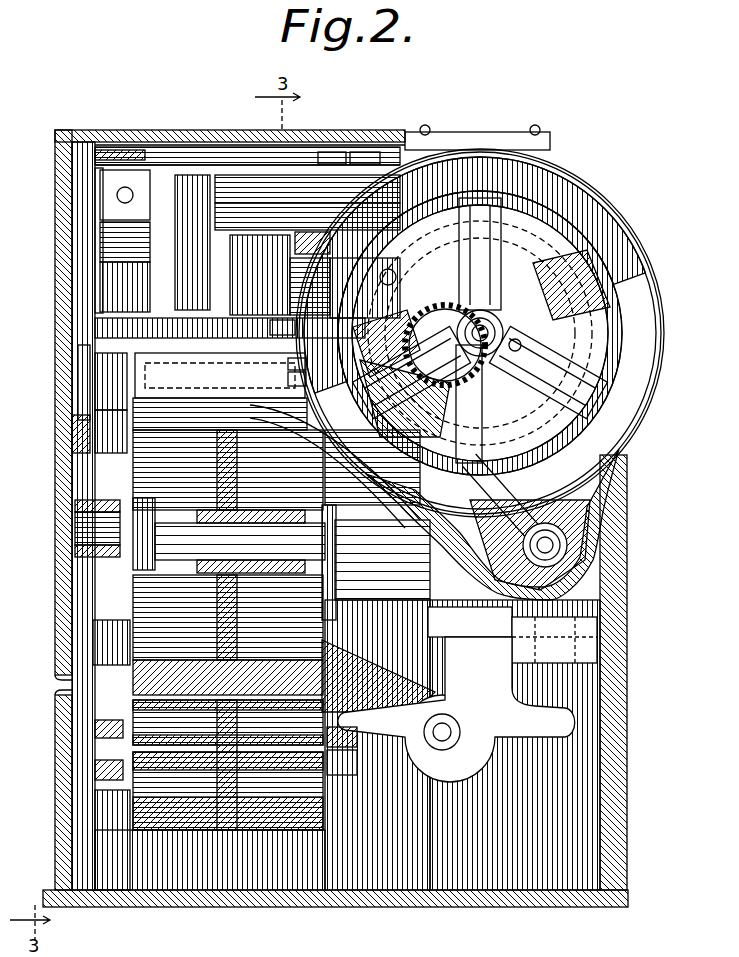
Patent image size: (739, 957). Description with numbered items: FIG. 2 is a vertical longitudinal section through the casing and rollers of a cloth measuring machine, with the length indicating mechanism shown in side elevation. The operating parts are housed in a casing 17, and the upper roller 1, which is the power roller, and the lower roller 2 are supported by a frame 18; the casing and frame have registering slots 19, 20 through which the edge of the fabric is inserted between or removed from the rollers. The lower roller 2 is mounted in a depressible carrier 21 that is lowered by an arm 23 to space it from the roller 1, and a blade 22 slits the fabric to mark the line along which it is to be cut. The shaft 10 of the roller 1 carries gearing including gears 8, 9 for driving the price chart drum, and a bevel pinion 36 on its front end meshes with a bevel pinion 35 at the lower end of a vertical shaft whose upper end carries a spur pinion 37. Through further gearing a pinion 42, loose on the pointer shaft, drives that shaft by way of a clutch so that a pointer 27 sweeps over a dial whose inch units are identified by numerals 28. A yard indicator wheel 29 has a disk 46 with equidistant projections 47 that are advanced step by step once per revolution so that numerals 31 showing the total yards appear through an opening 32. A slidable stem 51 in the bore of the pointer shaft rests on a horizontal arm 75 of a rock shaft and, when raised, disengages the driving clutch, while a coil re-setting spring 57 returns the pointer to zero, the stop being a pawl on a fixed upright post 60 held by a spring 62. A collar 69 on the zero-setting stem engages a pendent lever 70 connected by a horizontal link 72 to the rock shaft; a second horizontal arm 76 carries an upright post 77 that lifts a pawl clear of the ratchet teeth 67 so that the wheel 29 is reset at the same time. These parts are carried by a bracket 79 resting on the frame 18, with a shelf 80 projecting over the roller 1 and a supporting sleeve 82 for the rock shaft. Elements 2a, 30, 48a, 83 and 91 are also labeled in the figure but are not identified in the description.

The upper roller 1 is at (305, 615).
The lower roller 2 is at (325, 820).
The bracket 2a is at (432, 612).
The gear 8 is at (612, 505).
The gear 9 is at (480, 333).
The shaft 10 is at (377, 515).
The casing 17 is at (55, 773).
The frame 18 is at (72, 805).
The slot 19 is at (72, 680).
The slot 20 is at (111, 642).
The depressible carrier 21 is at (357, 770).
The blade 22 is at (378, 676).
The arm 23 is at (456, 709).
The pointer 27 is at (238, 147).
The numerals 28 is at (362, 152).
The yard indicator wheel 29 is at (100, 195).
The bearing block 30 is at (100, 240).
The numerals 31 is at (95, 178).
The opening 32 is at (118, 150).
The bevel pinion 35 is at (259, 275).
The bevel pinion 36 is at (200, 535).
The spur pinion 37 is at (95, 326).
The pinion 42 is at (445, 343).
The disk 46 is at (215, 184).
The projections 47 is at (215, 210).
The bracket arm 48a is at (330, 152).
The slidable stem 51 is at (288, 380).
The coil re-setting spring 57 is at (290, 270).
The fixed upright post 60 is at (270, 328).
The spring 62 is at (300, 240).
The ratchet teeth 67 is at (175, 285).
The collar 69 is at (515, 351).
The lever 70 is at (469, 404).
The horizontal link 72 is at (525, 530).
The horizontal arm 75 is at (352, 475).
The horizontal arm 76 is at (326, 466).
The upright post 77 is at (492, 205).
The bracket 79 is at (78, 388).
The shelf 80 is at (111, 381).
The supporting sleeve 82 is at (220, 375).
The pin 83 is at (288, 364).
The slide block 91 is at (111, 428).